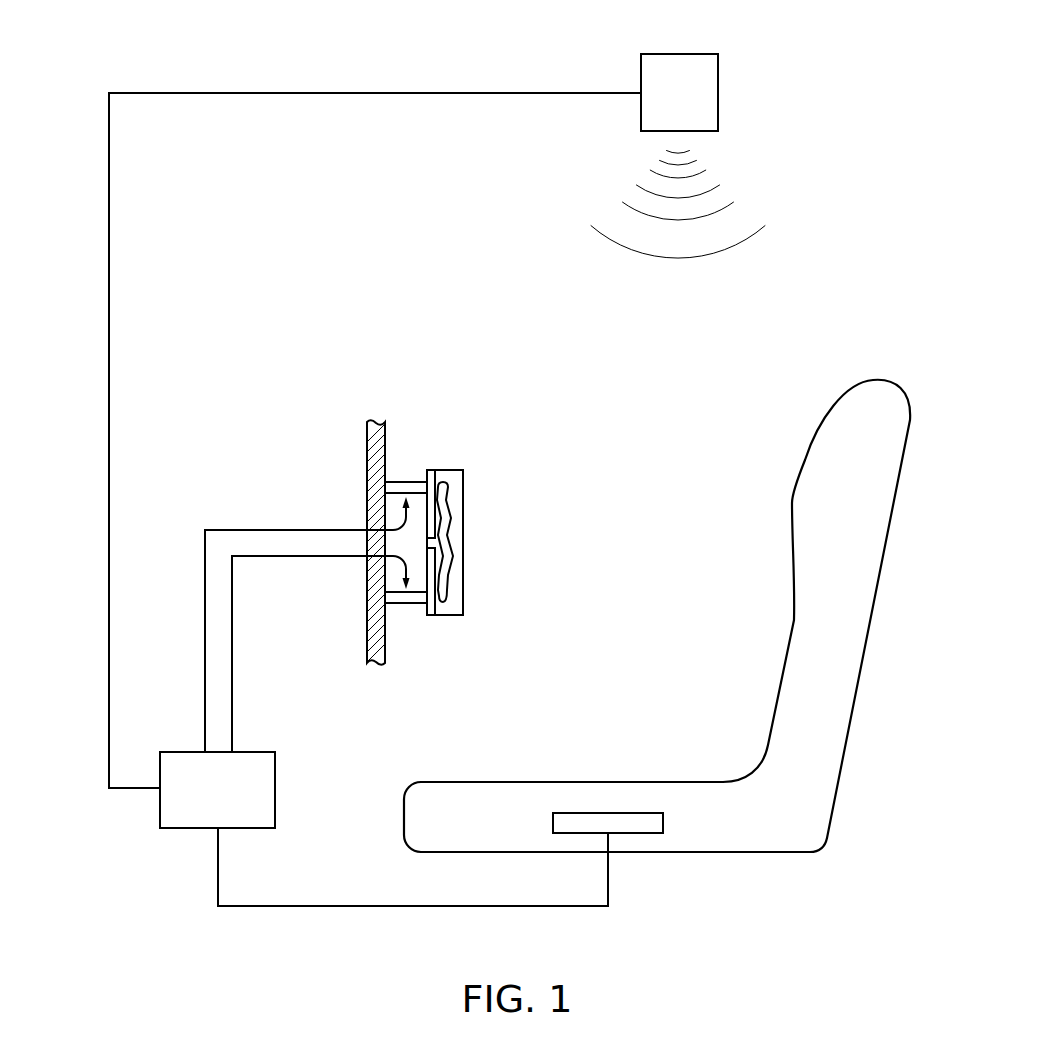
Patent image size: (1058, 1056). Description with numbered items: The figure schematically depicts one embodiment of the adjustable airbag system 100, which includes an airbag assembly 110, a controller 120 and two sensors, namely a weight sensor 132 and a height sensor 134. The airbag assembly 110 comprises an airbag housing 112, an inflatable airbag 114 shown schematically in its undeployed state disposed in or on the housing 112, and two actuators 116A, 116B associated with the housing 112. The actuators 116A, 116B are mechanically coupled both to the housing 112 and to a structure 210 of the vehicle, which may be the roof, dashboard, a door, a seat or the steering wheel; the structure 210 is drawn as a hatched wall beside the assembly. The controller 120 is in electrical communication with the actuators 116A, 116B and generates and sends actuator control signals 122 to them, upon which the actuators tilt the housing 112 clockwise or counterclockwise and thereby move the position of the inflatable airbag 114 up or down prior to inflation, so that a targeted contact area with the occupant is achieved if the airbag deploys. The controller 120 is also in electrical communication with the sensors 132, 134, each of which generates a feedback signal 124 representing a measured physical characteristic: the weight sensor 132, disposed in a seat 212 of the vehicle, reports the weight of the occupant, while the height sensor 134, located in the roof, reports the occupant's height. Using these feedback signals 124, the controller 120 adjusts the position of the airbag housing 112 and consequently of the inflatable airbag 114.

The adjustable airbag system 100 is at (820, 92).
The airbag assembly 110 is at (465, 675).
The airbag housing 112 is at (460, 469).
The inflatable airbag 114 is at (451, 557).
The actuator 116A is at (405, 481).
The actuator 116B is at (405, 606).
The controller 120 is at (196, 803).
The actuator control signals 122 is at (293, 528).
The feedback signal 124 is at (109, 277).
The weight sensor 132 is at (663, 823).
The height sensor 134 is at (658, 107).
The structure of the vehicle 210 is at (385, 423).
The seat 212 is at (688, 593).